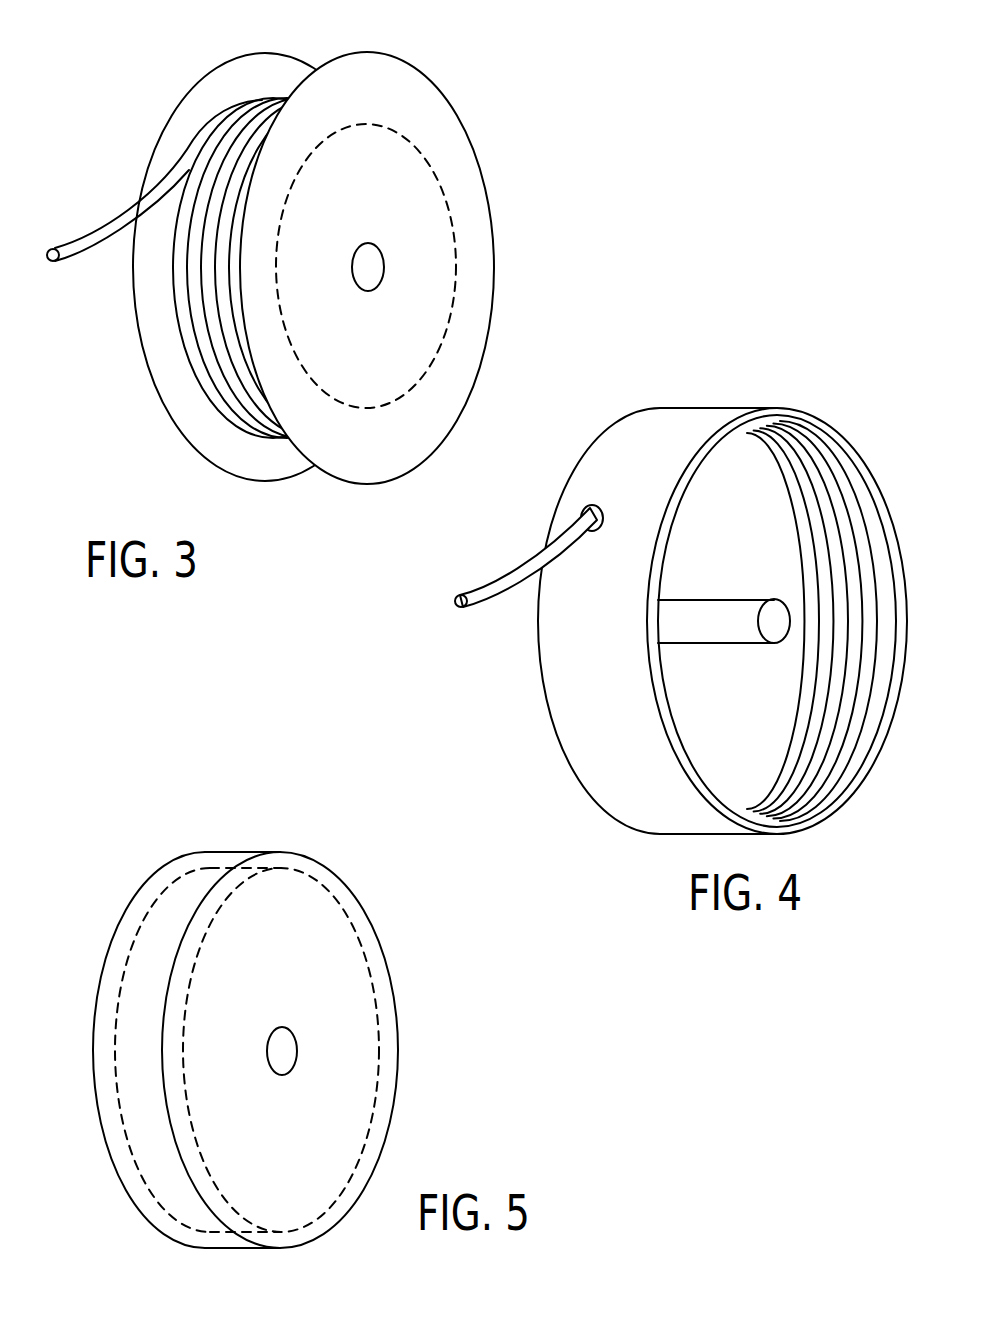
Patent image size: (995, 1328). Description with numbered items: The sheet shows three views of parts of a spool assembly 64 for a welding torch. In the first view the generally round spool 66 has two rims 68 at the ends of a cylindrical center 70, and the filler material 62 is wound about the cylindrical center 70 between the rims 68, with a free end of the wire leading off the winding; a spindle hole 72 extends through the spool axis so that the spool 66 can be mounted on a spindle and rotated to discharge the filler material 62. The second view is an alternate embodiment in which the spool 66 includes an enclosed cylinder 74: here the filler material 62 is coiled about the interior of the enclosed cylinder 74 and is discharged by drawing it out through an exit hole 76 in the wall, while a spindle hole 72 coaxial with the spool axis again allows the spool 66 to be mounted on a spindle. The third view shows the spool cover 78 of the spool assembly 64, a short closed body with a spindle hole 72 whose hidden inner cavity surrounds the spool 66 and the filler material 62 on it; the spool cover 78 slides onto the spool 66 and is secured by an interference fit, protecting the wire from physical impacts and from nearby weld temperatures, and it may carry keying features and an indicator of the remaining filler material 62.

In FIG. 3, the filler material 62 is at (98, 232).
In FIG. 4, the filler material 62 is at (502, 597).
In FIG. 5, the spool assembly 64 is at (162, 913).
In FIG. 3, the spool 66 is at (296, 248).
In FIG. 4, the spool 66 is at (681, 572).
In FIG. 3, the rims 68 is at (202, 78).
In FIG. 3, the cylindrical center 70 is at (452, 216).
In FIG. 3, the spindle hole 72 is at (368, 268).
In FIG. 4, the spindle hole 72 is at (743, 599).
In FIG. 5, the spindle hole 72 is at (280, 1050).
In FIG. 4, the enclosed cylinder 74 is at (737, 407).
In FIG. 4, the exit hole 76 is at (597, 503).
In FIG. 5, the spool cover 78 is at (237, 852).